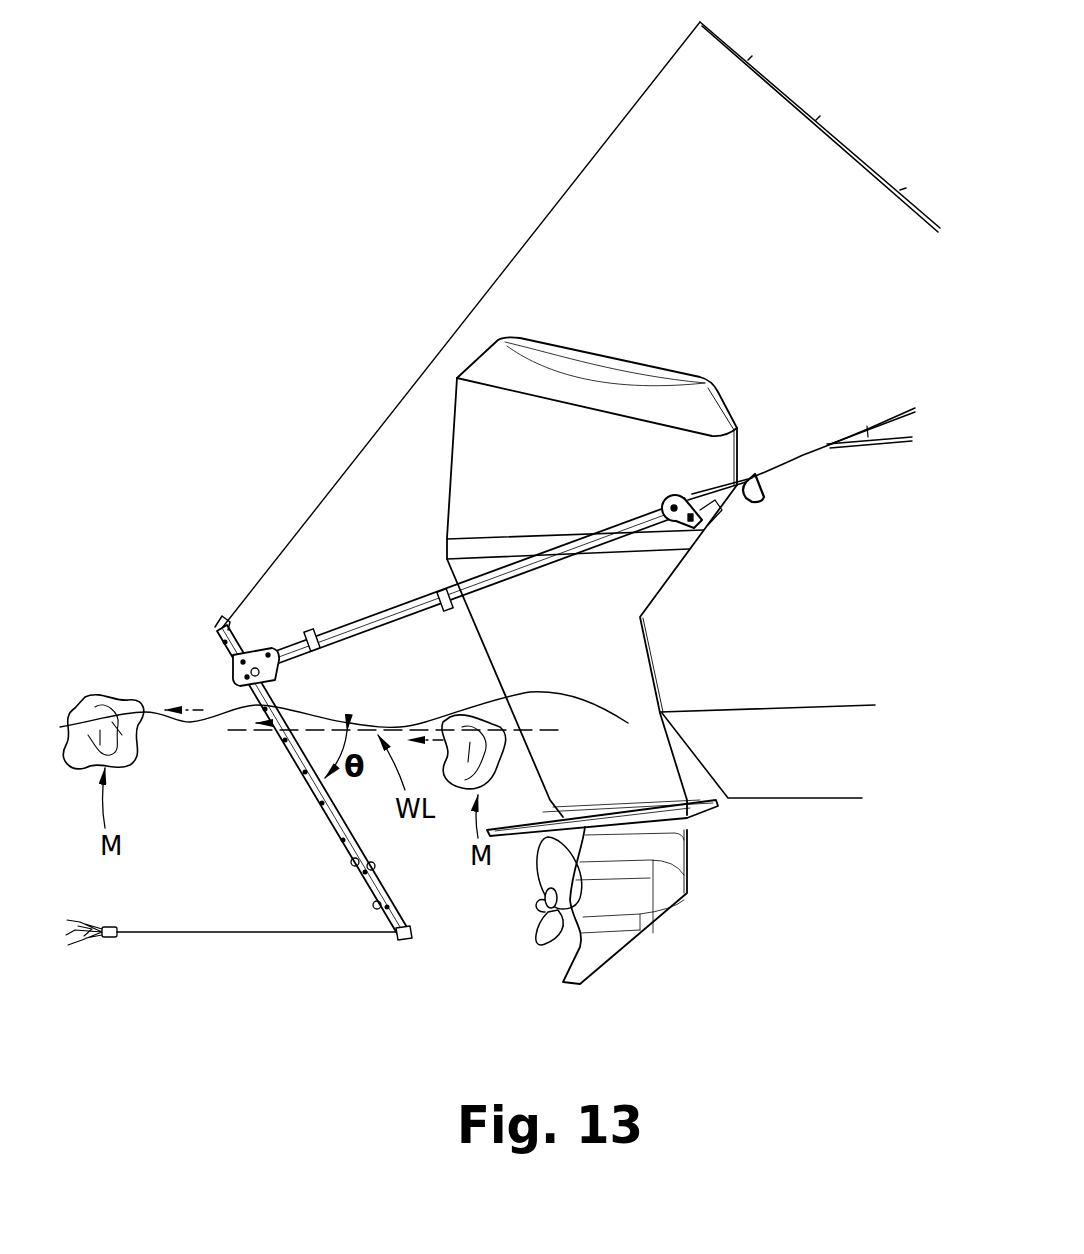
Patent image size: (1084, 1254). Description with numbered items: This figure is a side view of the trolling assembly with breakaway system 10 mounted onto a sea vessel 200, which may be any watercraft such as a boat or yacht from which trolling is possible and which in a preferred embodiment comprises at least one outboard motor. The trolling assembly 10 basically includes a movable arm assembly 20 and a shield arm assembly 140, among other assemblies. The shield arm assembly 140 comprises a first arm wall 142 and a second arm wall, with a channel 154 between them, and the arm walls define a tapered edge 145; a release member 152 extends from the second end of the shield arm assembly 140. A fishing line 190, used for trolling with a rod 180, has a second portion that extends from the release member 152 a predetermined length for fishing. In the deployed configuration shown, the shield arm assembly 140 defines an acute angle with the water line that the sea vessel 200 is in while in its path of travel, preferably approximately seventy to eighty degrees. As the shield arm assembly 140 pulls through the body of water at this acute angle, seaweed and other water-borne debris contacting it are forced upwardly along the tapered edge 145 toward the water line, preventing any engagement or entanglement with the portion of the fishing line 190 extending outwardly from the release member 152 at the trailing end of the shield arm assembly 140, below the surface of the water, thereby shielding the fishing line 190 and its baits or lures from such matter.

The trolling assembly with breakaway system 10 is at (724, 358).
The movable arm assembly 20 is at (378, 597).
The shield arm assembly 140 is at (305, 820).
The first arm wall 142 is at (355, 865).
The tapered edge 145 is at (375, 868).
The release member 152 is at (400, 940).
The channel 154 is at (375, 907).
The rod 180 is at (862, 135).
The fishing line 190 is at (385, 392).
The sea vessel 200 is at (826, 427).